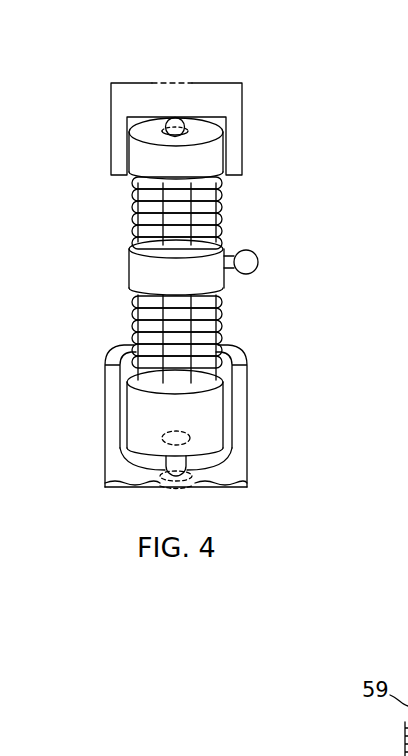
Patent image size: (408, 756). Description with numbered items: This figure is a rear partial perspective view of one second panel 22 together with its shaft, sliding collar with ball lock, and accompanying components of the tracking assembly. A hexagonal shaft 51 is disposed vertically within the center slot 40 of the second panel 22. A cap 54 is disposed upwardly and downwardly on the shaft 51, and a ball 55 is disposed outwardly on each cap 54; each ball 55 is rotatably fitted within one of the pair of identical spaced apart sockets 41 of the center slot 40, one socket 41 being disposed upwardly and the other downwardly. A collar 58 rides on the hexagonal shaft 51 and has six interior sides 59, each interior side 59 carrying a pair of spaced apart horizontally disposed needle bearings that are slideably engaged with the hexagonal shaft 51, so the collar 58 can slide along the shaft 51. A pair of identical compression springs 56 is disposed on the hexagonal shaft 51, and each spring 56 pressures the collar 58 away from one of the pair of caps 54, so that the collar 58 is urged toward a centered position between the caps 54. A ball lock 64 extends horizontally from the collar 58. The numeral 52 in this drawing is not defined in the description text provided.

The center slot 40 is at (137, 106).
The socket 41 is at (175, 117).
The ball 55 is at (188, 126).
The second panel 22 is at (242, 122).
The cap 54 is at (213, 158).
The interior side 59 is at (185, 252).
The collar 58 is at (224, 252).
The ball lock 64 is at (257, 255).
The compression spring 56 is at (168, 272).
The elastic spring member 52 is at (132, 325).
The hexagonal shaft 51 is at (222, 332).